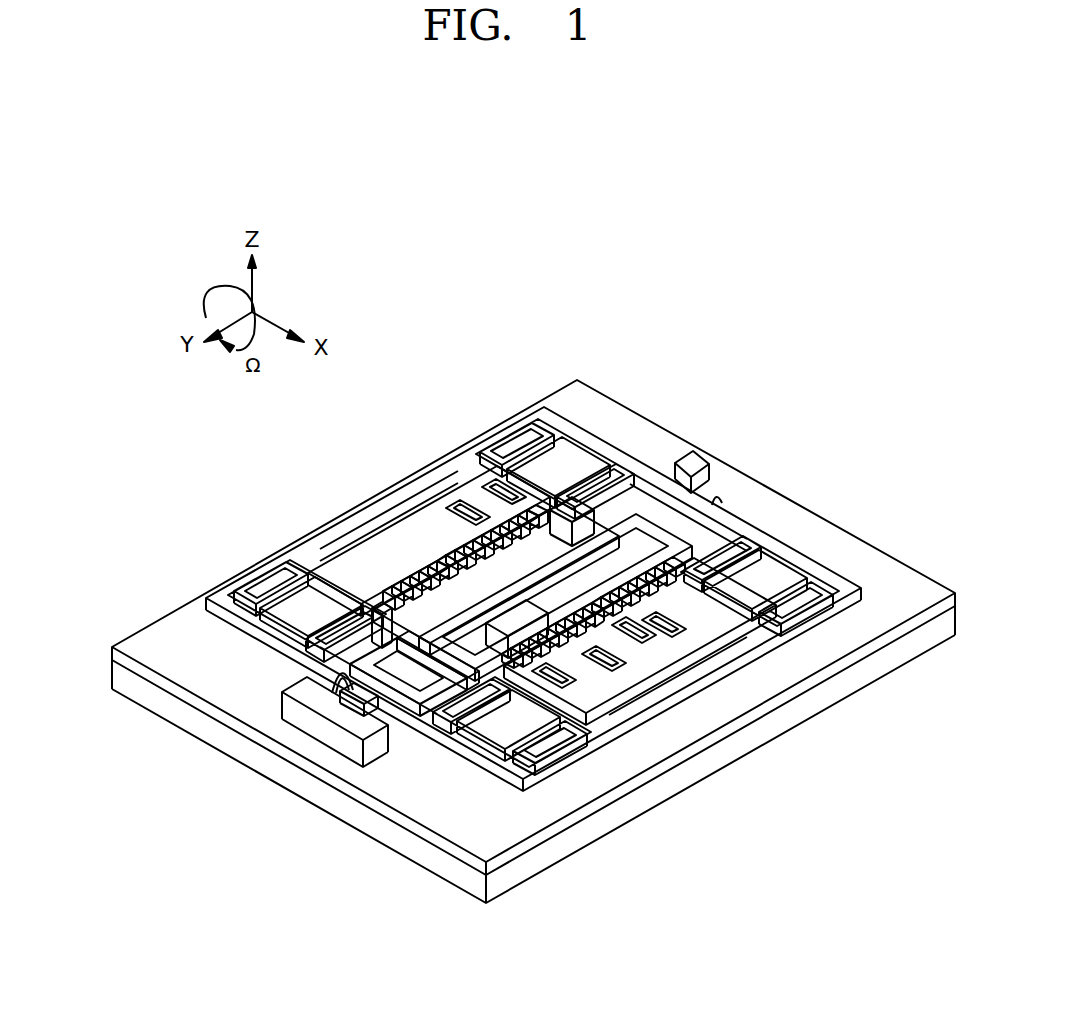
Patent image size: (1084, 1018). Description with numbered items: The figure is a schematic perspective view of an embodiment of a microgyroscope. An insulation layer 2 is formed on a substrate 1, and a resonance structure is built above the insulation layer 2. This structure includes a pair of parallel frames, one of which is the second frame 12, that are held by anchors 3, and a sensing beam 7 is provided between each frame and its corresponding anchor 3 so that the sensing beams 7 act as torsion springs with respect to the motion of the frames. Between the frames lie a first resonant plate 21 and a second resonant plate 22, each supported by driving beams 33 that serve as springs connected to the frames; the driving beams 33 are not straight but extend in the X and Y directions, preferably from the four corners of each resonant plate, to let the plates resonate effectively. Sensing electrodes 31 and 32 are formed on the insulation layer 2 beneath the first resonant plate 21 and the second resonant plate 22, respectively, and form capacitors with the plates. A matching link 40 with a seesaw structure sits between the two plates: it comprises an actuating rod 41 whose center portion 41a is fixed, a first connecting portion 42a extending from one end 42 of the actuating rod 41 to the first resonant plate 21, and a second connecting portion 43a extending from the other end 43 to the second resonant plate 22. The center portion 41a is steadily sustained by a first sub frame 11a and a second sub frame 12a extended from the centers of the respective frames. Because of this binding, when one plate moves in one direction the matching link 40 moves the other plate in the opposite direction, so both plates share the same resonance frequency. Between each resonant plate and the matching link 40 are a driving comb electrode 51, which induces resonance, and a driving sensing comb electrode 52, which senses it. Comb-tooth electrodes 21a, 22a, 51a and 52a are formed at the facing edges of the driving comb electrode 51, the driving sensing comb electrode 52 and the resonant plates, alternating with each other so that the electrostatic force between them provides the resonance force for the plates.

The substrate 1 is at (533, 748).
The insulation layer 2 is at (526, 627).
The anchor 3 is at (492, 594).
The sensing beam 7 is at (492, 585).
The first sub frame 11a is at (724, 455).
The second frame 12 is at (533, 650).
The second sub frame 12a is at (365, 600).
The first resonant plate 21 is at (429, 512).
The comb-shaped electrode of the first resonant plate 21a is at (465, 557).
The second resonant plate 22 is at (679, 582).
The comb-shaped electrode of the second resonant plate 22a is at (662, 537).
The sensing electrode 31 is at (387, 487).
The sensing electrode 32 is at (751, 695).
The driving beam 33 is at (566, 607).
The matching link 40 is at (555, 510).
The actuating rod 41 is at (496, 554).
The center portion of the actuating rod 41a is at (465, 543).
The one end of the actuating rod 42 is at (584, 501).
The first connecting portion 42a is at (593, 504).
The other end of the actuating rod 43 is at (408, 626).
The second connecting portion 43a is at (438, 662).
The driving comb electrode 51 is at (592, 587).
The comb-shaped electrode of the driving comb electrode 51a is at (748, 698).
The driving sensing comb electrode 52 is at (581, 612).
The comb-shaped electrode of the driving sensing comb electrode 52a is at (674, 744).